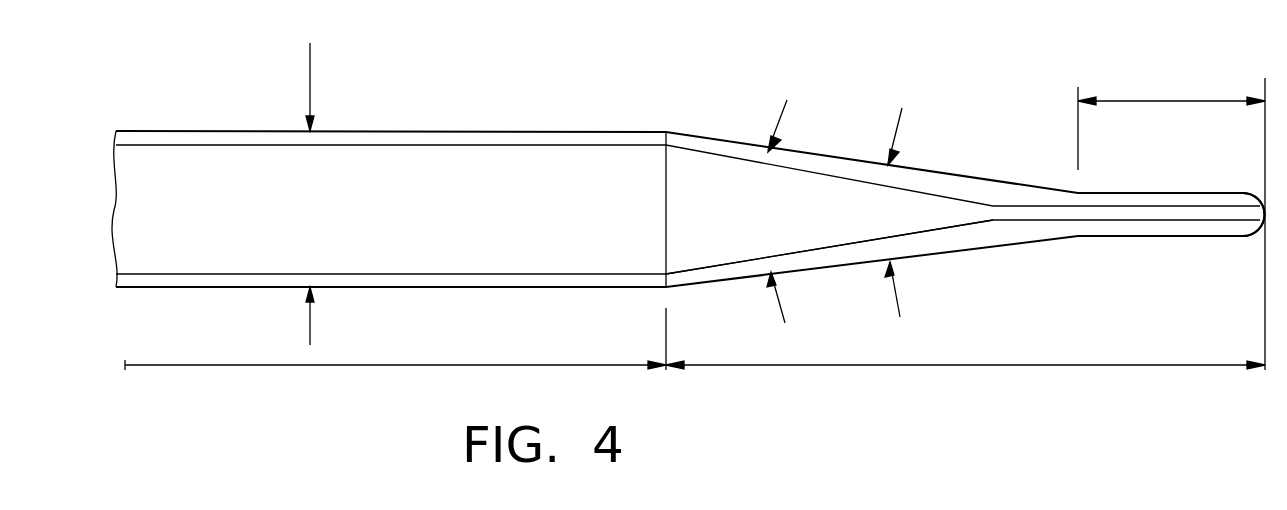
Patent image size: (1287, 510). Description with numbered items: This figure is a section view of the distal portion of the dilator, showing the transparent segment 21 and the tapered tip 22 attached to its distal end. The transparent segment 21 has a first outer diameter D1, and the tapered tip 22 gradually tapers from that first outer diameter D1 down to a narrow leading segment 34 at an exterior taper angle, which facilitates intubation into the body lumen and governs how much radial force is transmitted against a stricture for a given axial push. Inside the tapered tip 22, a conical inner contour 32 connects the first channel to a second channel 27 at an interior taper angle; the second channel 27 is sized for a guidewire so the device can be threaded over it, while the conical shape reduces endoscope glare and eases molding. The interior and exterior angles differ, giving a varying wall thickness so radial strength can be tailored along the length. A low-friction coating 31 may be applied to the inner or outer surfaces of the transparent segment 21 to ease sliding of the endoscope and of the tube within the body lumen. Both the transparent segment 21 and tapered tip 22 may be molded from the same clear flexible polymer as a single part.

The coating 31 is at (567, 116).
The conical inner contour 32 is at (783, 253).
The second channel 27 is at (1240, 216).
The first outer diameter D1 is at (310, 81).
The transparent segment 21 is at (386, 365).
The tapered tip 22 is at (975, 365).
The narrow leading segment 34 is at (1175, 100).